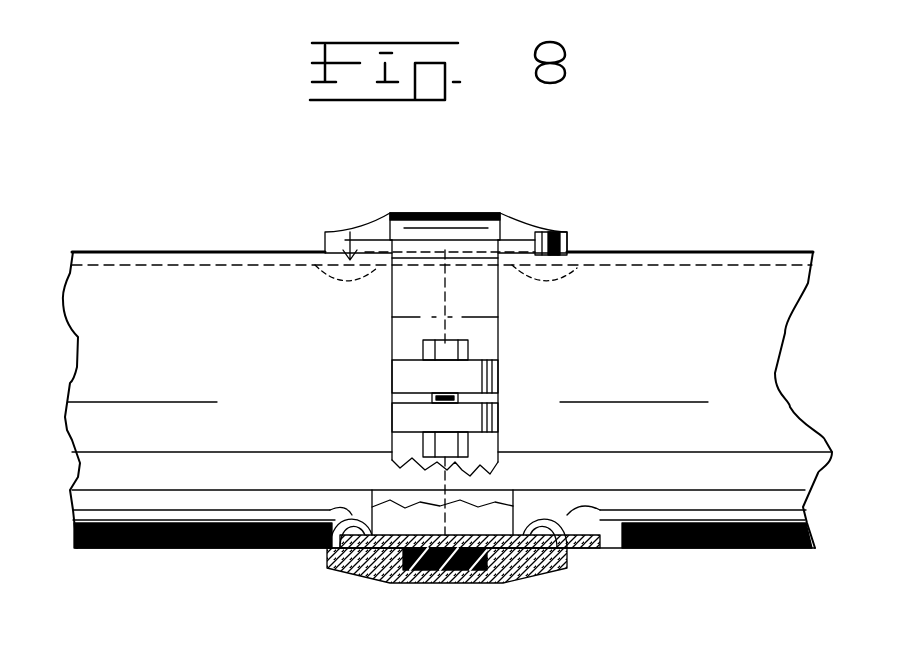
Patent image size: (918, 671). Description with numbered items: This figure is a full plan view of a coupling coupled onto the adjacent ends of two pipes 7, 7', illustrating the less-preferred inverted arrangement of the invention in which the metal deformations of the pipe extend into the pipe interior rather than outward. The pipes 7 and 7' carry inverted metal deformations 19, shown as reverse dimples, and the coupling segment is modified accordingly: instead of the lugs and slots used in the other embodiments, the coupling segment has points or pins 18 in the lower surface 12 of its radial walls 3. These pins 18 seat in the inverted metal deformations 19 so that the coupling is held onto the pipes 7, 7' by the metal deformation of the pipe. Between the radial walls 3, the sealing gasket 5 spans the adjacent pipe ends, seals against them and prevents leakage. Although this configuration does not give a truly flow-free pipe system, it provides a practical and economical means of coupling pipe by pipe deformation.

The radial walls 3 is at (575, 245).
The sealing gasket 5 is at (440, 580).
The pipe 7 is at (439, 364).
The pipe 7' is at (665, 368).
The lower surface 12 is at (372, 262).
The points or pins 18 is at (350, 232).
The inverted metal deformations 19 is at (553, 278).